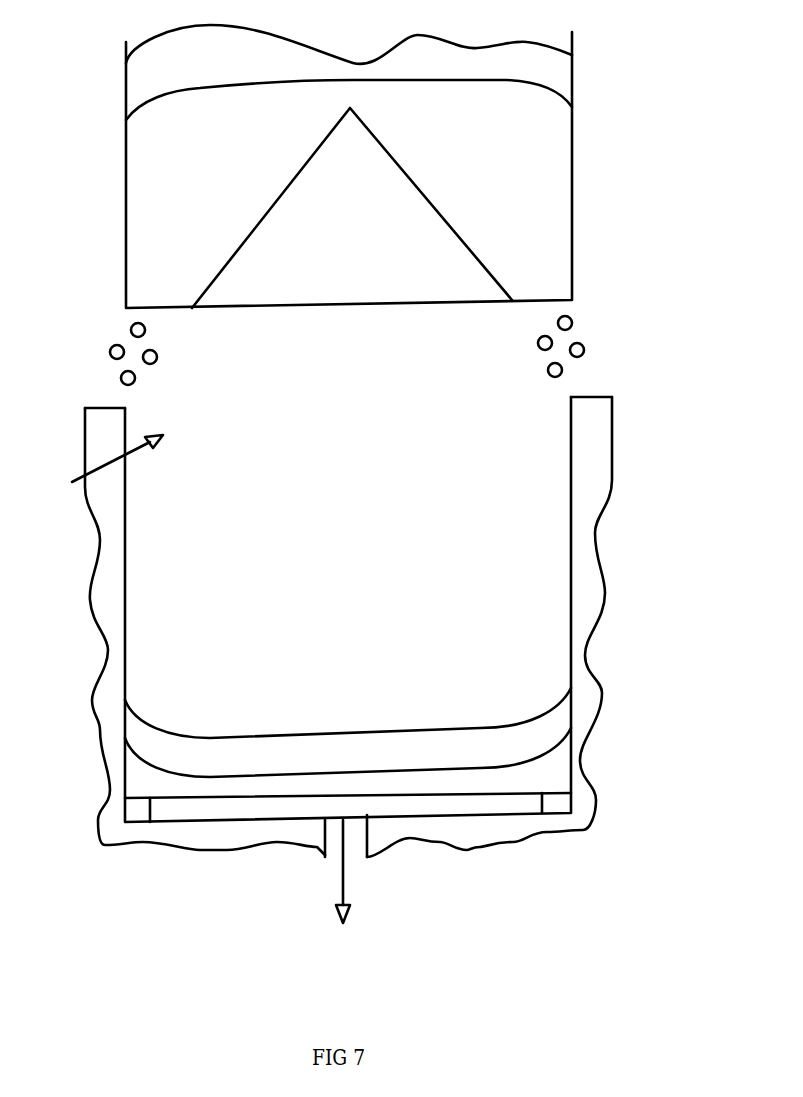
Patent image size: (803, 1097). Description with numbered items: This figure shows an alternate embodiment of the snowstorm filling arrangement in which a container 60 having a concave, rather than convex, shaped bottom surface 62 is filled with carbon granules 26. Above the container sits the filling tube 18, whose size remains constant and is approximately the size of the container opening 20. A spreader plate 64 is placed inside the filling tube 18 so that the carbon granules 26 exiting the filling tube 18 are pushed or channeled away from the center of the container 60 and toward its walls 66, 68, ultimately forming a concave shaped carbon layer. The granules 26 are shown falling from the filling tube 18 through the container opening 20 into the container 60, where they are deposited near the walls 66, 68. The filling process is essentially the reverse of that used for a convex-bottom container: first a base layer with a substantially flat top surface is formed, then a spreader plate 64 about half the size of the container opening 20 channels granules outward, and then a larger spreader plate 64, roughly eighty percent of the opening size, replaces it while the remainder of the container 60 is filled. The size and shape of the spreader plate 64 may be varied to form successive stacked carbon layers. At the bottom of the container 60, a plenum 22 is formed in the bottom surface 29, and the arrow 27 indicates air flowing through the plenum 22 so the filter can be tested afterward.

The filling tube 18 is at (550, 73).
The spreader plate 64 is at (487, 267).
The carbon granules 26 is at (142, 352).
The container 60 is at (588, 438).
The wall 66 is at (123, 582).
The wall 68 is at (570, 570).
The concave shaped bottom surface 62 is at (150, 765).
The bottom surface 29 is at (235, 822).
The plenum 22 is at (337, 830).
The container opening 20 is at (100, 467).
The arrow 27 is at (343, 880).